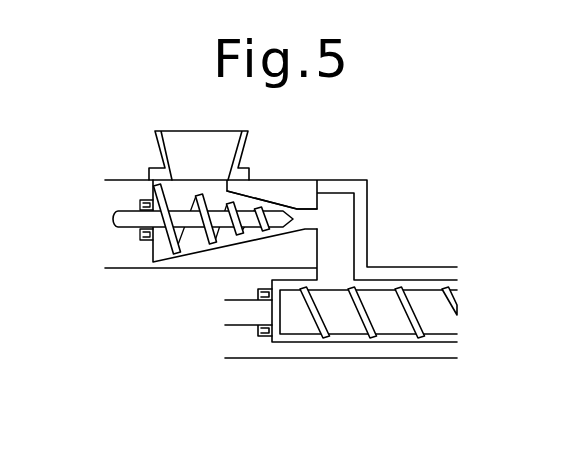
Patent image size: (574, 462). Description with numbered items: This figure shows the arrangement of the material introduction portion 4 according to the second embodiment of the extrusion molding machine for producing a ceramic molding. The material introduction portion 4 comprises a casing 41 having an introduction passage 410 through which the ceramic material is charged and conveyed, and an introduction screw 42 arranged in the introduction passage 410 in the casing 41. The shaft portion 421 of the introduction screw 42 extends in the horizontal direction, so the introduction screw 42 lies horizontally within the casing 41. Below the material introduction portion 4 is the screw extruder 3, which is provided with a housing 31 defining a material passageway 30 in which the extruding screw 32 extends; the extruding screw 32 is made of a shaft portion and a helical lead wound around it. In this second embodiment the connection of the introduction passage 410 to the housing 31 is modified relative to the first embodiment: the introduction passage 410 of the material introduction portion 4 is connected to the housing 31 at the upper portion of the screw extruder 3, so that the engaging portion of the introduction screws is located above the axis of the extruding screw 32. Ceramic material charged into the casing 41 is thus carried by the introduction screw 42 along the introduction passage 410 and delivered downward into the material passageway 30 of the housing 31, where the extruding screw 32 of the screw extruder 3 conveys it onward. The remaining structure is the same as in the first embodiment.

The screw extruder 3 is at (332, 310).
The material introduction portion 4 is at (266, 168).
The material passageway 30 is at (356, 337).
The housing 31 is at (247, 345).
The extruding screw 32 is at (425, 306).
The casing 41 is at (297, 193).
The introduction screw 42 is at (185, 228).
The introduction passage 410 is at (229, 236).
The shaft portion 421 is at (132, 218).